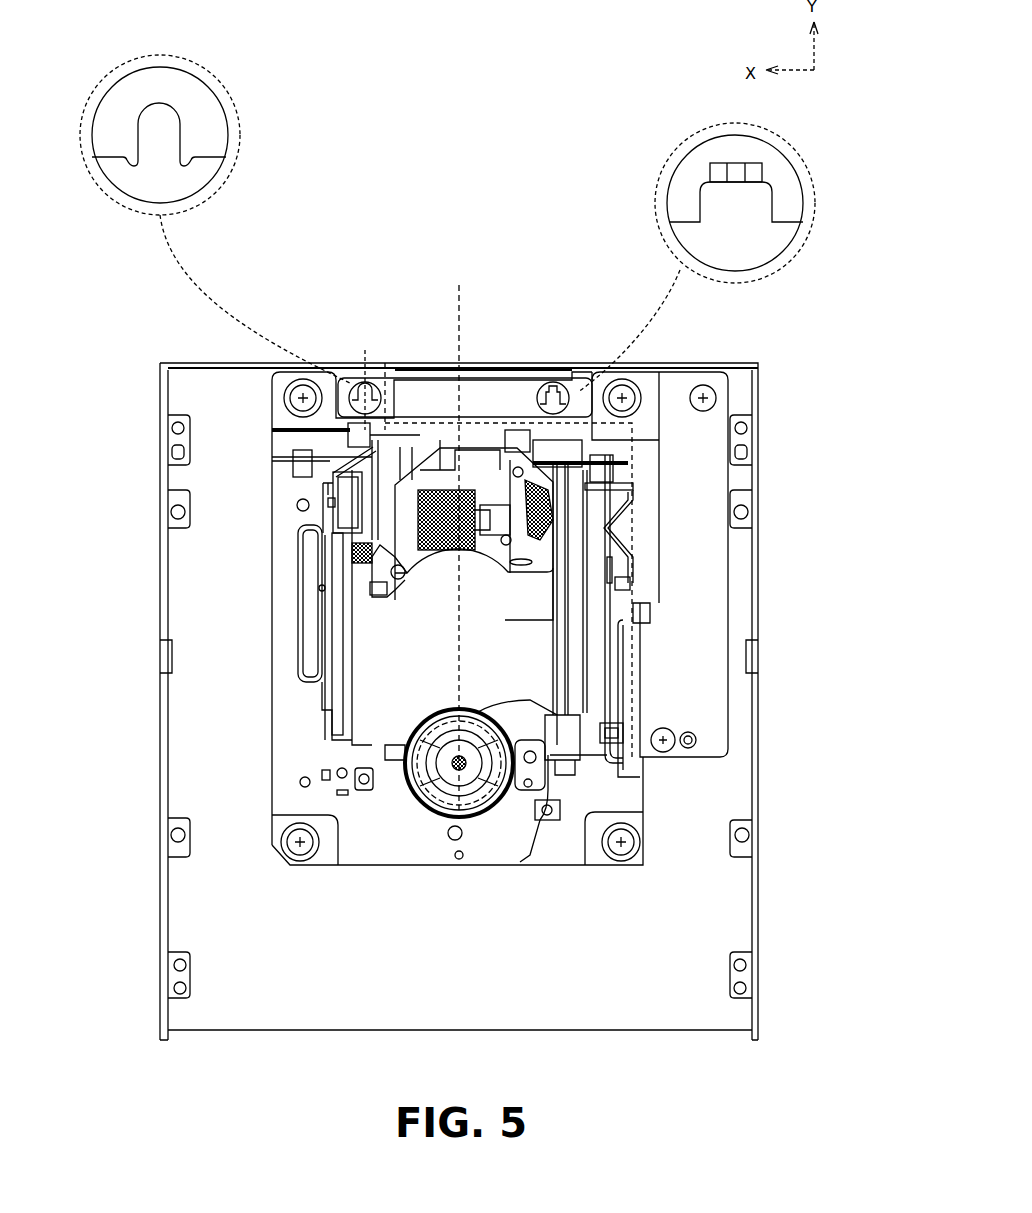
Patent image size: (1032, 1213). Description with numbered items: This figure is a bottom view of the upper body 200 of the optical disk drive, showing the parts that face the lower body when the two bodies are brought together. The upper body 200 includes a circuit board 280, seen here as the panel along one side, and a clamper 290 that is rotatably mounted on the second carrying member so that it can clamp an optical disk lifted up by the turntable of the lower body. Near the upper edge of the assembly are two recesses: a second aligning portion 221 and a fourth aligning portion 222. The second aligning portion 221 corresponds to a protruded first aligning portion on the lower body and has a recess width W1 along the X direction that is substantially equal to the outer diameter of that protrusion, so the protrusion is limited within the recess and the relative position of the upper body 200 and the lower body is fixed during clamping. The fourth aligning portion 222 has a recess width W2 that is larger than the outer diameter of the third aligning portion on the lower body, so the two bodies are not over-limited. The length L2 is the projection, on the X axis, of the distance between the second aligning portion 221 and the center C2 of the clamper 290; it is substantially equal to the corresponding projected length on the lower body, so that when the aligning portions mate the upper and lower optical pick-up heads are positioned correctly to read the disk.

The upper body 200 is at (652, 863).
The second aligning portion 221 is at (383, 397).
The fourth aligning portion 222 is at (553, 385).
The circuit board 280 is at (730, 562).
The clamper 290 is at (478, 808).
The center of the clamper C2 is at (459, 765).
The recess width of the second aligning portion W1 is at (212, 145).
The recess width of the fourth aligning portion W2 is at (770, 212).
The length of the projection of the distance between the second aligning portion and L2 is at (365, 350).